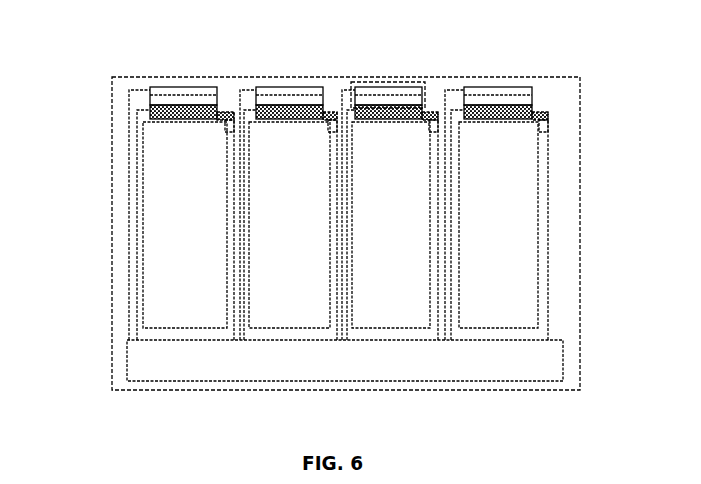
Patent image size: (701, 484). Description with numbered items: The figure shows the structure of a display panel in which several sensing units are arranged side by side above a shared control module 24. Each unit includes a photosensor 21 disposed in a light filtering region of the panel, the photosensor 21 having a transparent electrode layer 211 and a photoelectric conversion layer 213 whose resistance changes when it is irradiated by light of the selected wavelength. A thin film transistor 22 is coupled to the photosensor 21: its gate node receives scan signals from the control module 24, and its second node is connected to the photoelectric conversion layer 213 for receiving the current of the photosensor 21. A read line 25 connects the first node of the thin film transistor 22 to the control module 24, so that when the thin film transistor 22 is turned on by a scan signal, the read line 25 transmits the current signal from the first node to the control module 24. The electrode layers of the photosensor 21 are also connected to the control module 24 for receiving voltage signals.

The photosensor 21 is at (388, 82).
The transparent electrode layer 211 is at (162, 87).
The photoelectric conversion layer 213 is at (150, 107).
The thin film transistor 22 is at (551, 119).
The control module 24 is at (565, 358).
The read line 25 is at (547, 238).